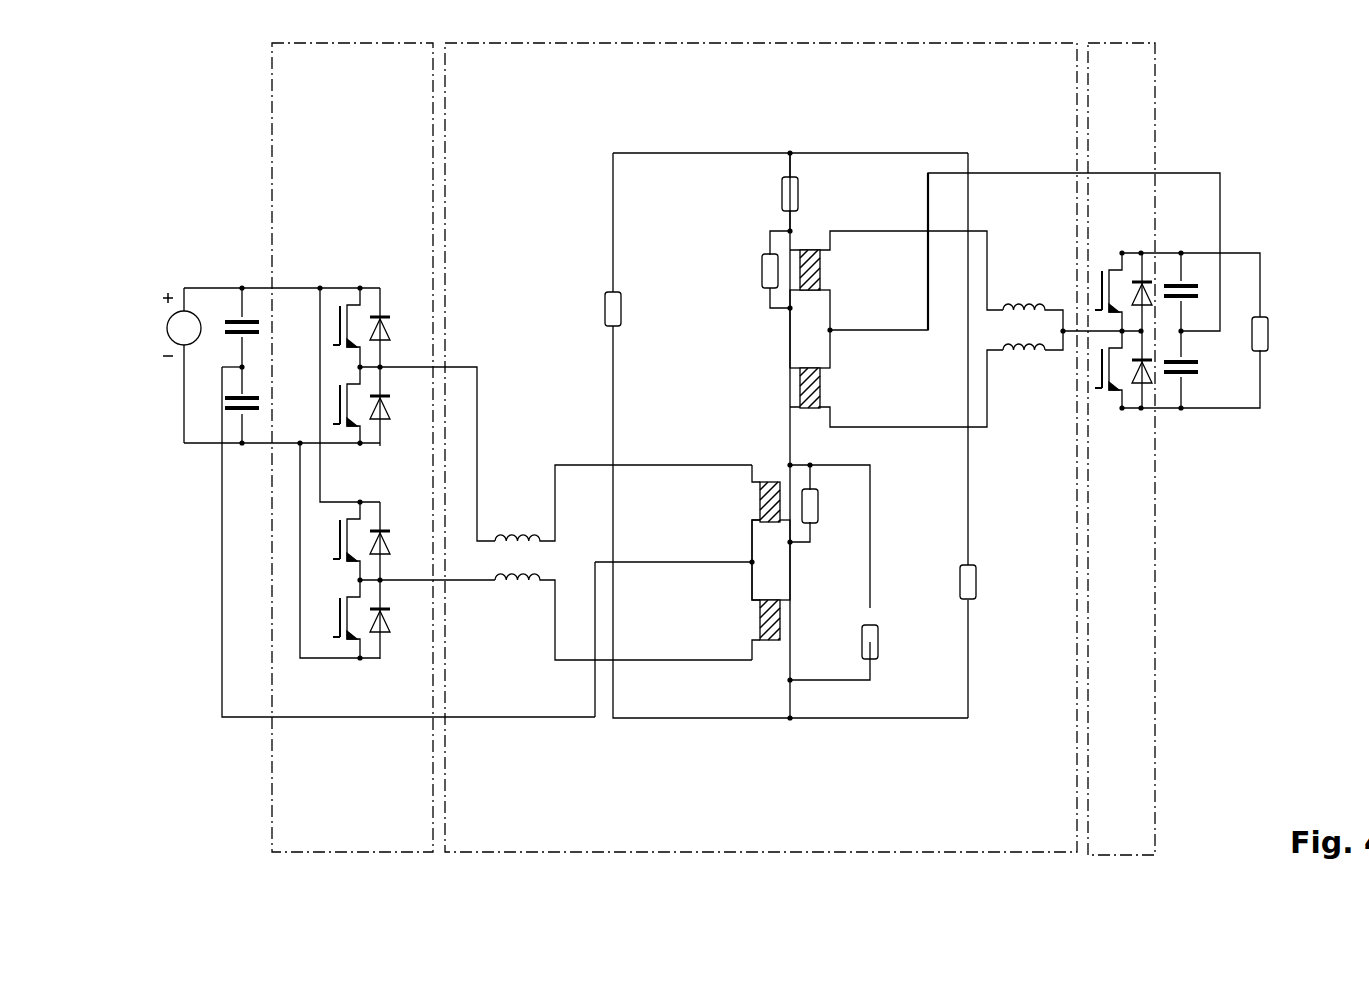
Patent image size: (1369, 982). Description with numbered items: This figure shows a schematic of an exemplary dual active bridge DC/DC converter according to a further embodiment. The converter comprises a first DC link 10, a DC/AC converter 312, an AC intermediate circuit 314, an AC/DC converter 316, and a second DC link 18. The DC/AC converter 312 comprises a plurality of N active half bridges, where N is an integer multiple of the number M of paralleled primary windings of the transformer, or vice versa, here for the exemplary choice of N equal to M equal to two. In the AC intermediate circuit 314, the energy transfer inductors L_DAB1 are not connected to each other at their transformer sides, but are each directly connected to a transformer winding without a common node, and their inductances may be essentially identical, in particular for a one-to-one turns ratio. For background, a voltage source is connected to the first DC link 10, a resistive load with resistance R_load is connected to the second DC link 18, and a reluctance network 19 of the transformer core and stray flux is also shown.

The first DC link 10 is at (242, 292).
The second DC link 18 is at (1181, 387).
The reluctance network 19 is at (967, 485).
The DC/AC converter 312 is at (328, 847).
The AC intermediate circuit 314 is at (512, 847).
The AC/DC converter 316 is at (1145, 833).